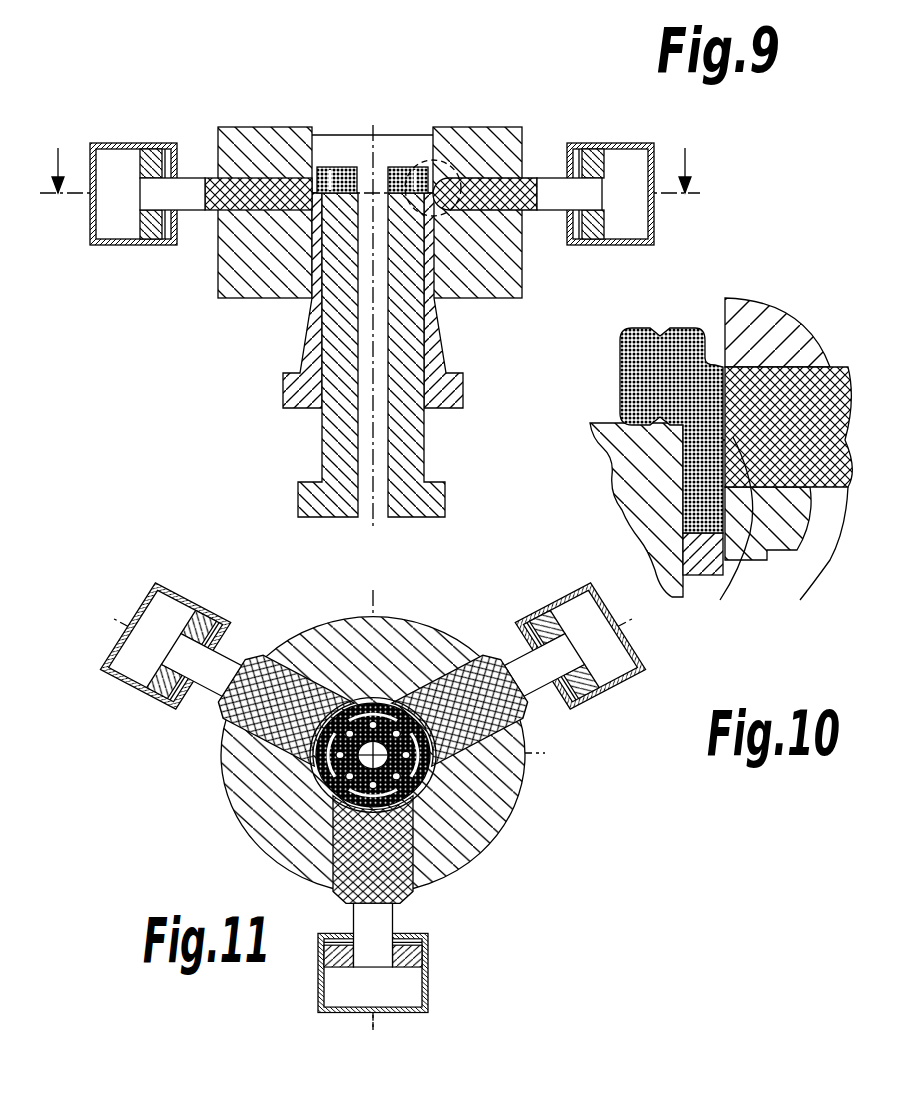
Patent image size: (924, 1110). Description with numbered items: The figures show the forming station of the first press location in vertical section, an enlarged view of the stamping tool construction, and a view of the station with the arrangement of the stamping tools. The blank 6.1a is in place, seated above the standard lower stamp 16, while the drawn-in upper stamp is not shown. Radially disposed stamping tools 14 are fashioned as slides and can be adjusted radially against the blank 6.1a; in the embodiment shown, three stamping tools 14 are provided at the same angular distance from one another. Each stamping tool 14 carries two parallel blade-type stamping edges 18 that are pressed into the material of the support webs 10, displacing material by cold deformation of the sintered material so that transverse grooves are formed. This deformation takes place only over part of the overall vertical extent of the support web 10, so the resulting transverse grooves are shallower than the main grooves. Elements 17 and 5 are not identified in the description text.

In FIG. 9, the blank 6.1a is at (345, 165).
In FIG. 10, the blank 6.1a is at (667, 353).
In FIG. 9, the stamping tool 14 is at (500, 174).
In FIG. 10, the stamping tool 14 is at (800, 540).
In FIG. 11, the stamping tool 14 is at (495, 657).
In FIG. 9, the lower stamp 16 is at (412, 435).
In FIG. 9, the outer sleeve 17 is at (433, 348).
In FIG. 9, the blade-type stamping edge 18 is at (370, 212).
In FIG. 10, the blade-type stamping edge 18 is at (737, 407).
In FIG. 10, the support web 10 is at (607, 452).
In FIG. 10, the gap 5 is at (730, 461).